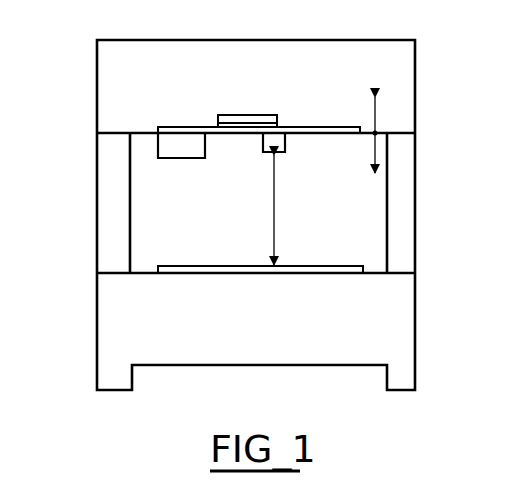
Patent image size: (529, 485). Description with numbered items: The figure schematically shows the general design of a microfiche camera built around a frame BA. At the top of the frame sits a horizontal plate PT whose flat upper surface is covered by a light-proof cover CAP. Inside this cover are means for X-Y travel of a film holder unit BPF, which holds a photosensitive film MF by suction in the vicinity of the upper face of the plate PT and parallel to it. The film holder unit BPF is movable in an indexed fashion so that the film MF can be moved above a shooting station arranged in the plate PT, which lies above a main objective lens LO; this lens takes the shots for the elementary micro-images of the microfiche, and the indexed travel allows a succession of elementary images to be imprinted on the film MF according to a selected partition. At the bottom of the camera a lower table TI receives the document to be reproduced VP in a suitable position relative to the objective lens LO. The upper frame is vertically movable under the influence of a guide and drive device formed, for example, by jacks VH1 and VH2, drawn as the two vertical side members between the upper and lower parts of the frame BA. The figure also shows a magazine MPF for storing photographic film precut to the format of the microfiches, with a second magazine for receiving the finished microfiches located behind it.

The light-proof cover CAP is at (418, 52).
The jack VH1 is at (110, 213).
The jack VH2 is at (403, 209).
The frame BA is at (415, 323).
The lower table TI is at (194, 276).
The horizontal plate PT is at (170, 127).
The magazine MPF is at (170, 146).
The film holder unit BPF is at (236, 110).
The photosensitive film MF is at (280, 127).
The main objective lens LO is at (285, 140).
The document to be reproduced VP is at (292, 262).